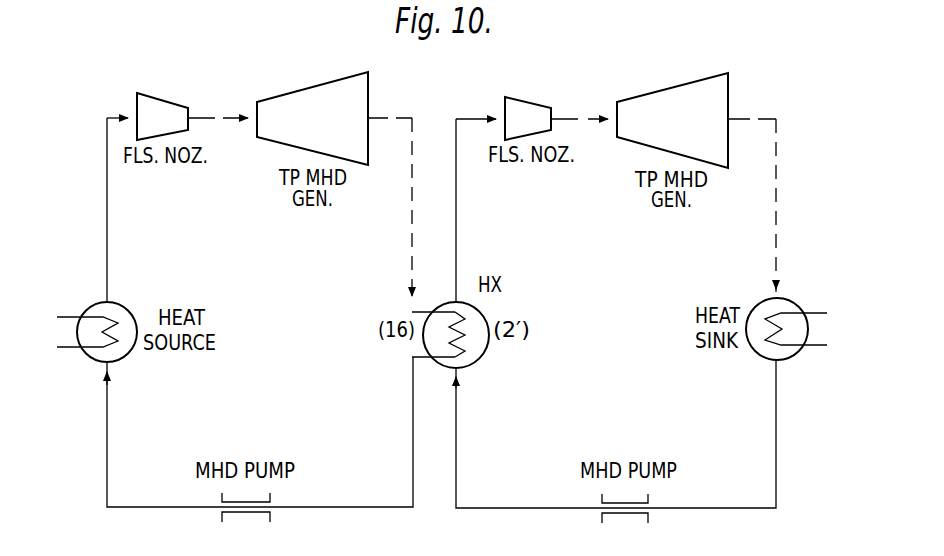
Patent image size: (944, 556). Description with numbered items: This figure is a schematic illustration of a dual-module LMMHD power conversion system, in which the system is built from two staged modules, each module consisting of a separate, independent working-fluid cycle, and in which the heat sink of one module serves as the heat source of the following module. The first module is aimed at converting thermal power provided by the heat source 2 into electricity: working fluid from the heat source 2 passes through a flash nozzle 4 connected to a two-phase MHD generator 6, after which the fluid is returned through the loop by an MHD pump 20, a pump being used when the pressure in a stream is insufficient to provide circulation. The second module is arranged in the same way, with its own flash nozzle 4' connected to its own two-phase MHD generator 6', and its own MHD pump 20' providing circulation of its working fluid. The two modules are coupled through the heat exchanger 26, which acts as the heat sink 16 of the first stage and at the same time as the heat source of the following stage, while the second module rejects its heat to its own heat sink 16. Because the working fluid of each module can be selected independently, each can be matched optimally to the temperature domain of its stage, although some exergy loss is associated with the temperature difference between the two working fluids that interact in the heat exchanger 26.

The heat source 2 is at (97, 358).
The flash nozzle 4 is at (162, 97).
The two-phase MHD generator 6 is at (312, 98).
The flash nozzle 4' is at (528, 96).
The two-phase MHD generator 6' is at (672, 103).
The heat sink 16 is at (783, 353).
The MHD pump 20 is at (265, 522).
The MHD pump 20' is at (645, 523).
The heat exchanger 26 is at (477, 345).